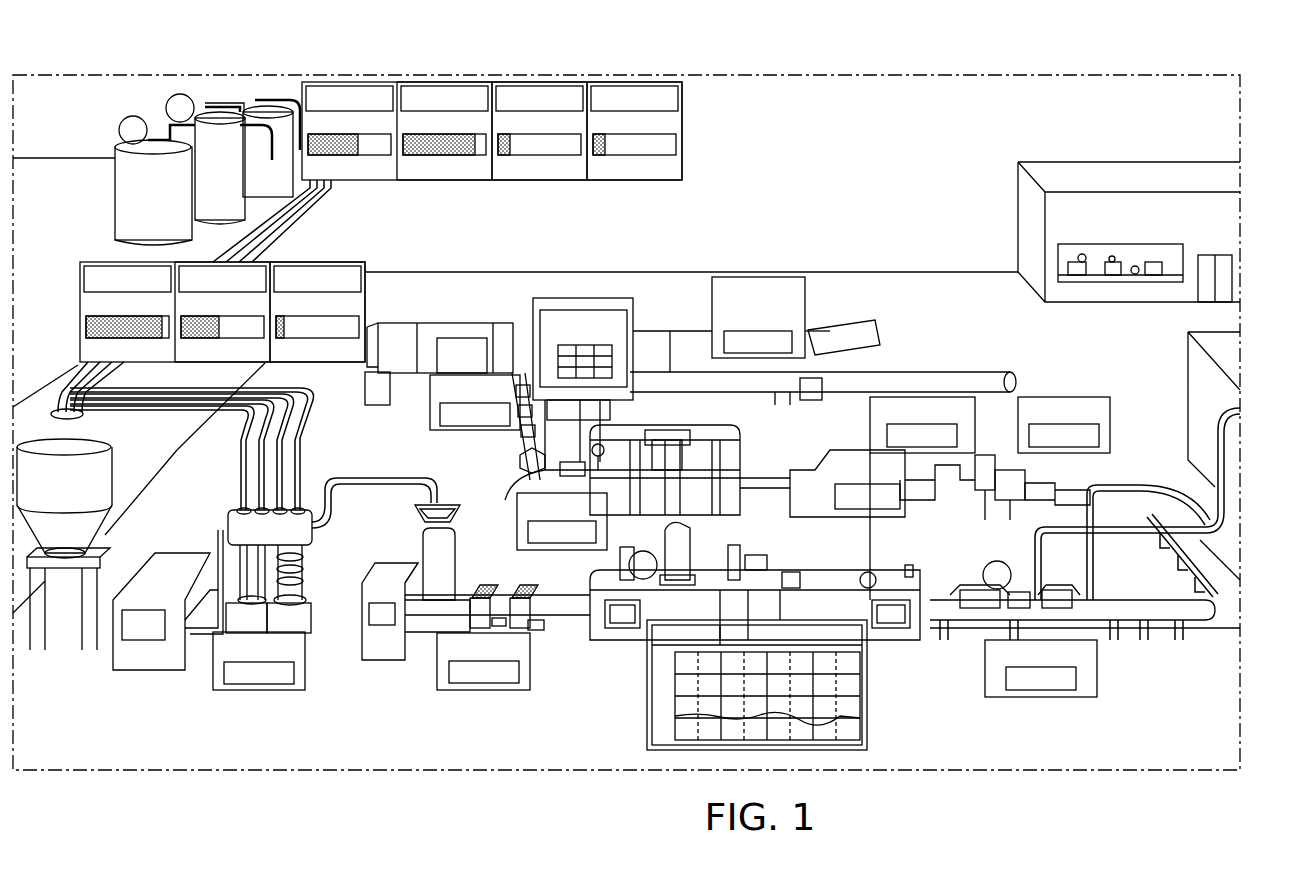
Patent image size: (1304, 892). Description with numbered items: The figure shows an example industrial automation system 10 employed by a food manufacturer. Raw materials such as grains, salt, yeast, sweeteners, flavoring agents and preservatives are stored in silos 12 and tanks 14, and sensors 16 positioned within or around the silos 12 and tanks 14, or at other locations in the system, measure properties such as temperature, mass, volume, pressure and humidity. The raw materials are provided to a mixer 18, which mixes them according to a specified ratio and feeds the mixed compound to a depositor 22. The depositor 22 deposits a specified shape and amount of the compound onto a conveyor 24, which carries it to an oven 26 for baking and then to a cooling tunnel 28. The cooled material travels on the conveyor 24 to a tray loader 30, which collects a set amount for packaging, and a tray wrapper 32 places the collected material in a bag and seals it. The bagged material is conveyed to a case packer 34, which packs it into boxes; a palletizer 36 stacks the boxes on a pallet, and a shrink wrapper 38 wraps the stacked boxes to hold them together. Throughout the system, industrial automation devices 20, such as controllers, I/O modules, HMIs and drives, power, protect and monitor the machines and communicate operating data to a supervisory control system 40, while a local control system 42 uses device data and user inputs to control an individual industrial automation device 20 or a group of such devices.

The industrial automation system 10 is at (757, 55).
The silos 12 is at (225, 108).
The tanks 14 is at (70, 322).
The sensors 16 is at (133, 116).
The mixer 18 is at (315, 640).
The industrial automation devices 20 is at (995, 420).
The depositor 22 is at (540, 638).
The conveyor 24 is at (768, 455).
The oven 26 is at (835, 568).
The cooling tunnel 28 is at (1090, 615).
The tray loader 30 is at (1110, 432).
The tray wrapper 32 is at (862, 413).
The case packer 34 is at (505, 520).
The palletizer 36 is at (420, 415).
The shrink wrapper 38 is at (820, 298).
The supervisory control system 40 is at (1132, 250).
The local control system 42 is at (125, 655).